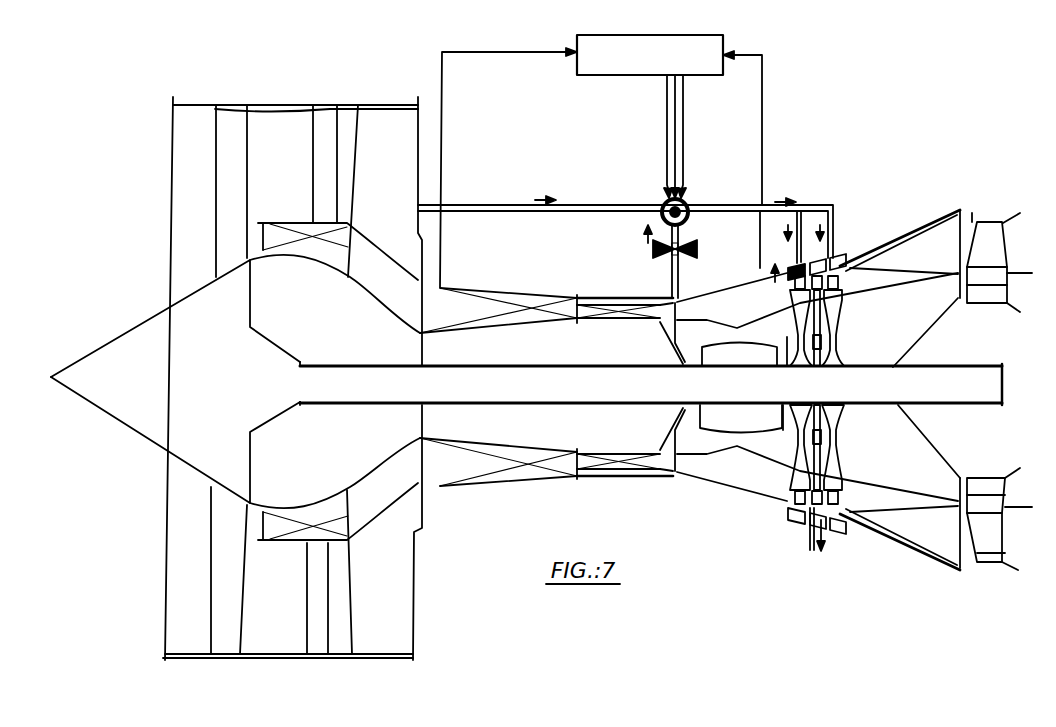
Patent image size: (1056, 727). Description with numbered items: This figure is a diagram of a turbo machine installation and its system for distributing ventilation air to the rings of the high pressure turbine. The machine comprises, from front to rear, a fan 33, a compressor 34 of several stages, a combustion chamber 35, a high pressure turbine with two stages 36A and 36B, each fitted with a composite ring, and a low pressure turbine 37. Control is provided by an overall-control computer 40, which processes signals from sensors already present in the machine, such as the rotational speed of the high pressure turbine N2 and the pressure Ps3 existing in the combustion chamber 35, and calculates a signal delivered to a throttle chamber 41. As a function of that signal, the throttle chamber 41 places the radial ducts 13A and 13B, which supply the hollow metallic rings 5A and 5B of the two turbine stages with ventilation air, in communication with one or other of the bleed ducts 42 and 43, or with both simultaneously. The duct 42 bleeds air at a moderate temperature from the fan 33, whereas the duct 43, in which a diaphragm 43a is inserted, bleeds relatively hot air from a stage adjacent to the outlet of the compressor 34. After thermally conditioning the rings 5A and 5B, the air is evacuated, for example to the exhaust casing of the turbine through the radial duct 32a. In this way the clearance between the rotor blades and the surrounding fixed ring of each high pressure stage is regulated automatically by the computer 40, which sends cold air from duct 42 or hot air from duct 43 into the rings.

The fan 33 is at (357, 171).
The compressor 34 is at (547, 302).
The combustion chamber 35 is at (737, 293).
The high pressure turbine stage 36A is at (802, 285).
The high pressure turbine stage 36B is at (934, 216).
The low pressure turbine 37 is at (924, 226).
The hollow metallic ring 5A is at (801, 268).
The hollow metallic ring 5B is at (841, 261).
The radial duct 13A is at (803, 250).
The radial duct 13B is at (836, 257).
The radial duct 32a is at (810, 535).
The computer 40 is at (637, 67).
The throttle chamber 41 is at (689, 200).
The duct for bleeding ventilation air 42 is at (483, 206).
The duct for bleeding ventilation air 43 is at (681, 240).
The diaphragm 43a is at (653, 248).
The rotational speed of the high pressure turbine N2 is at (537, 52).
The pressure in the combustion chamber Ps3 is at (765, 58).